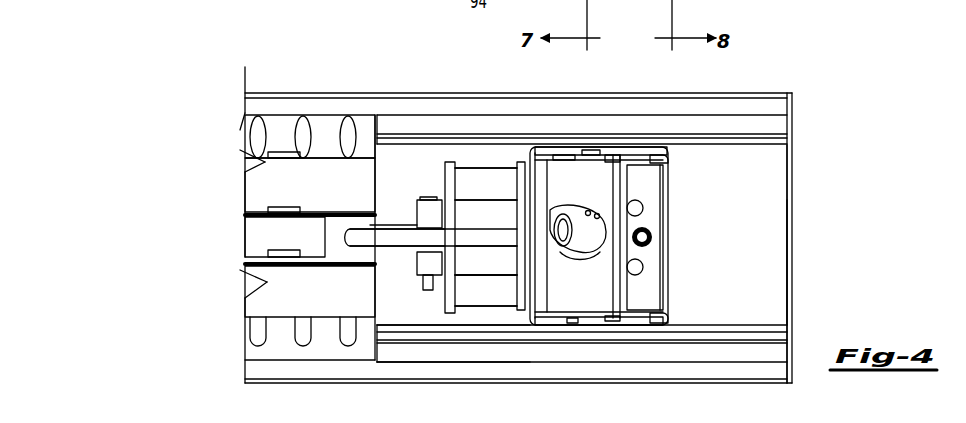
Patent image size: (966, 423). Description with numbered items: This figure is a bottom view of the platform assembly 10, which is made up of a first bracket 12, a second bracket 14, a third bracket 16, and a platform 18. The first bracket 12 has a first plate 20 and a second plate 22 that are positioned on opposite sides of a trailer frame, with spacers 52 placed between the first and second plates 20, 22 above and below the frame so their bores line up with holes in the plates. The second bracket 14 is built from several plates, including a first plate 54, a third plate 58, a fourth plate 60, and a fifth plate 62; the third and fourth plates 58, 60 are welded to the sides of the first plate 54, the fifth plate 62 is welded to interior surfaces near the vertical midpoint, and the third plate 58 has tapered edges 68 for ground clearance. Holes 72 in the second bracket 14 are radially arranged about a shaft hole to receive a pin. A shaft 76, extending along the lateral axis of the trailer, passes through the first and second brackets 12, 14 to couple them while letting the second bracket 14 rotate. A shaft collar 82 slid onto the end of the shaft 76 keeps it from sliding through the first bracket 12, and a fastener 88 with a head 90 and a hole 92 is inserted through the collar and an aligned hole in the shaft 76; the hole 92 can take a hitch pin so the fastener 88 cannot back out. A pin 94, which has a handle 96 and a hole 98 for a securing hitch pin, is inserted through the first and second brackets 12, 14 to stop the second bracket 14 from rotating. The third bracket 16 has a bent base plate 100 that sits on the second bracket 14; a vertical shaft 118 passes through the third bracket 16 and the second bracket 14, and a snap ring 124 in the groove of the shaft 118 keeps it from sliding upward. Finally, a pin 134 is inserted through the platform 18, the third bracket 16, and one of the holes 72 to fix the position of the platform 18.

The platform assembly 10 is at (724, 79).
The first bracket 12 is at (507, 314).
The second bracket 14 is at (616, 323).
The third bracket 16 is at (794, 249).
The platform 18 is at (794, 112).
The first plate 20 is at (450, 180).
The second plate 22 is at (515, 172).
The spacers 52 is at (467, 178).
The first plate 54 is at (537, 153).
The third plate 58 is at (567, 325).
The fourth plate 60 is at (568, 148).
The fifth plate 62 is at (610, 282).
The tapered edges 68 is at (665, 152).
The holes 72 is at (645, 210).
The shaft 76 is at (468, 255).
The shaft collar 82 is at (366, 237).
The fastener 88 is at (433, 292).
The head 90 is at (428, 194).
The hole 92 is at (420, 283).
The pin 94 is at (480, 238).
The handle 96 is at (560, 209).
The hole 98 is at (420, 225).
The base plate 100 is at (760, 182).
The shaft 118 is at (588, 257).
The snap ring 124 is at (596, 152).
The pin 134 is at (654, 238).